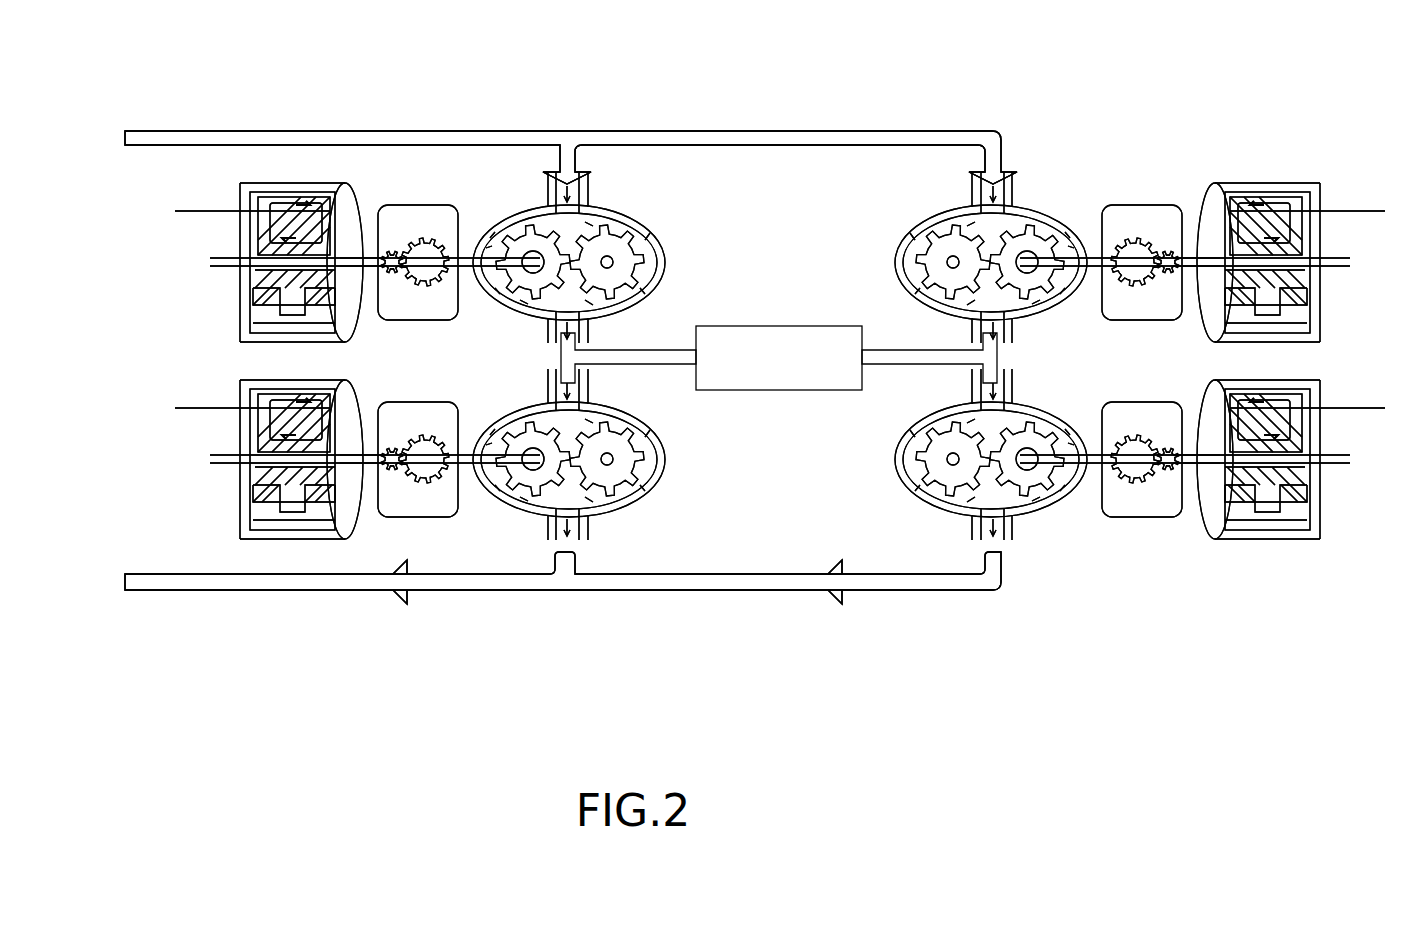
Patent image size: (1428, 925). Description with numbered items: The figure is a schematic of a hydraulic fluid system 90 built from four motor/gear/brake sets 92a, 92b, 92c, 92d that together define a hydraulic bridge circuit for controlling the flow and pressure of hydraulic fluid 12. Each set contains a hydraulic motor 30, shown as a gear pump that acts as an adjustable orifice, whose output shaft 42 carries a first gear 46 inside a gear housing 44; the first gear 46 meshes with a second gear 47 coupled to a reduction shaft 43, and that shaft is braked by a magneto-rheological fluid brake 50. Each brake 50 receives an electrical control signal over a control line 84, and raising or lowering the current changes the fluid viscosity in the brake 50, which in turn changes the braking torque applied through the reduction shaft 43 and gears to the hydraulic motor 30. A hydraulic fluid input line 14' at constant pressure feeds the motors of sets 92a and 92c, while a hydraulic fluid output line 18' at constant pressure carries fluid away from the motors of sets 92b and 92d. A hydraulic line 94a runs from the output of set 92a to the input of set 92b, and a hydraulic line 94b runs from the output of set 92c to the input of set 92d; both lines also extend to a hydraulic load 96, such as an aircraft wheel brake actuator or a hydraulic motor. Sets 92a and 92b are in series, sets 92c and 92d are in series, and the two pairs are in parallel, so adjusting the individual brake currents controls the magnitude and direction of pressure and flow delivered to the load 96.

The hydraulic fluid 12 is at (525, 131).
The hydraulic fluid input line 14' is at (571, 108).
The hydraulic fluid output line 18' is at (563, 618).
The hydraulic motor 30 is at (655, 195).
The output shaft 42 is at (463, 290).
The reduction shaft 43 is at (367, 232).
The gear housing 44 is at (428, 320).
The first gear 46 is at (425, 238).
The second gear 47 is at (385, 282).
The magneto-rheological fluid (MRF) brake 50 is at (235, 300).
The electrical signal control line 84 is at (213, 211).
The hydraulic fluid system 90 is at (268, 650).
The motor/gear/brake set 92a is at (170, 265).
The motor/gear/brake set 92b is at (178, 486).
The motor/gear/brake set 92c is at (1222, 97).
The motor/gear/brake set 92d is at (1185, 605).
The hydraulic line 94a is at (672, 350).
The hydraulic line 94b is at (895, 350).
The hydraulic load 96 is at (778, 392).